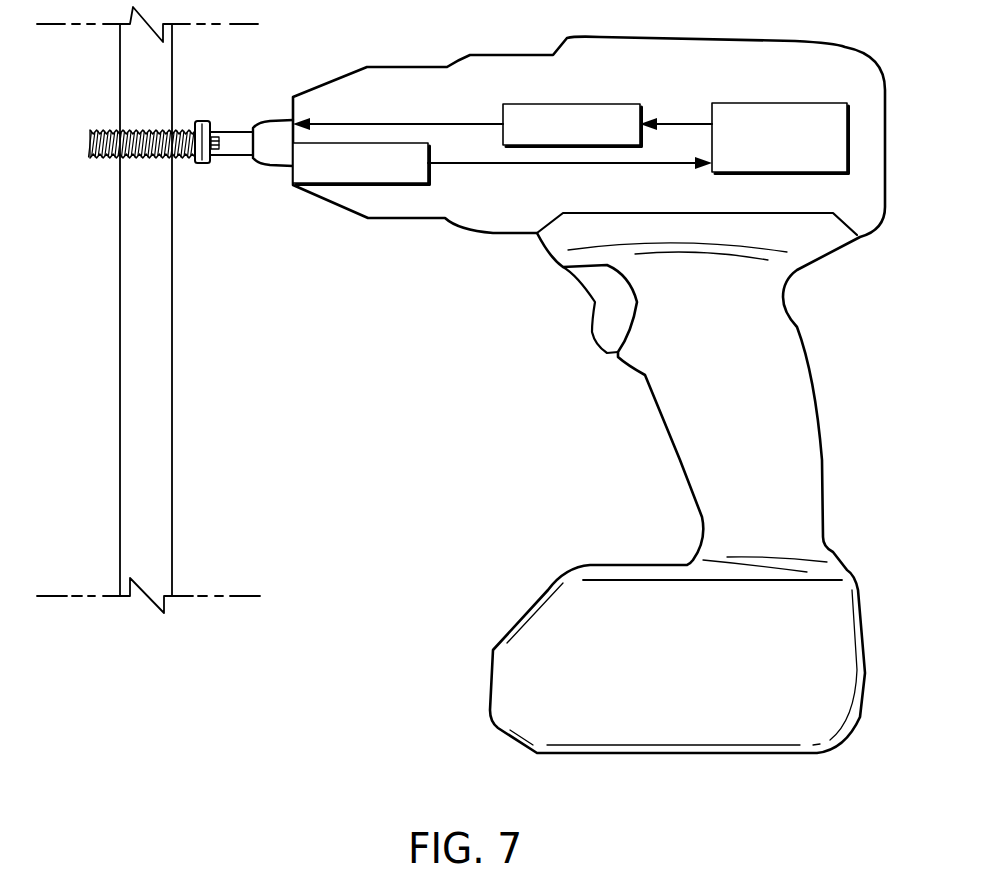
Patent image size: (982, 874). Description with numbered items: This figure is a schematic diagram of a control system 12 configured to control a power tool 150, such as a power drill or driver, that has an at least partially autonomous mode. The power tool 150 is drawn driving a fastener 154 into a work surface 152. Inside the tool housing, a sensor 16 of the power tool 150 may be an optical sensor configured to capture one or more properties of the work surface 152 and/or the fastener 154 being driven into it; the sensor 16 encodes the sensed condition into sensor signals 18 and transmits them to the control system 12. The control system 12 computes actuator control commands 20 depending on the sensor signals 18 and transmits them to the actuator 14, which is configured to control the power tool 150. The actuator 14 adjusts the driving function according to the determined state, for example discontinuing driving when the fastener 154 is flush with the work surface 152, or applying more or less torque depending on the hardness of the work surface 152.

The control system 12 is at (780, 103).
The actuator 14 is at (576, 104).
The sensor 16 is at (358, 188).
The sensor signals 18 is at (517, 165).
The actuator control commands 20 is at (685, 122).
The power tool 150 is at (660, 430).
The work surface 152 is at (173, 362).
The fastener 154 is at (209, 165).